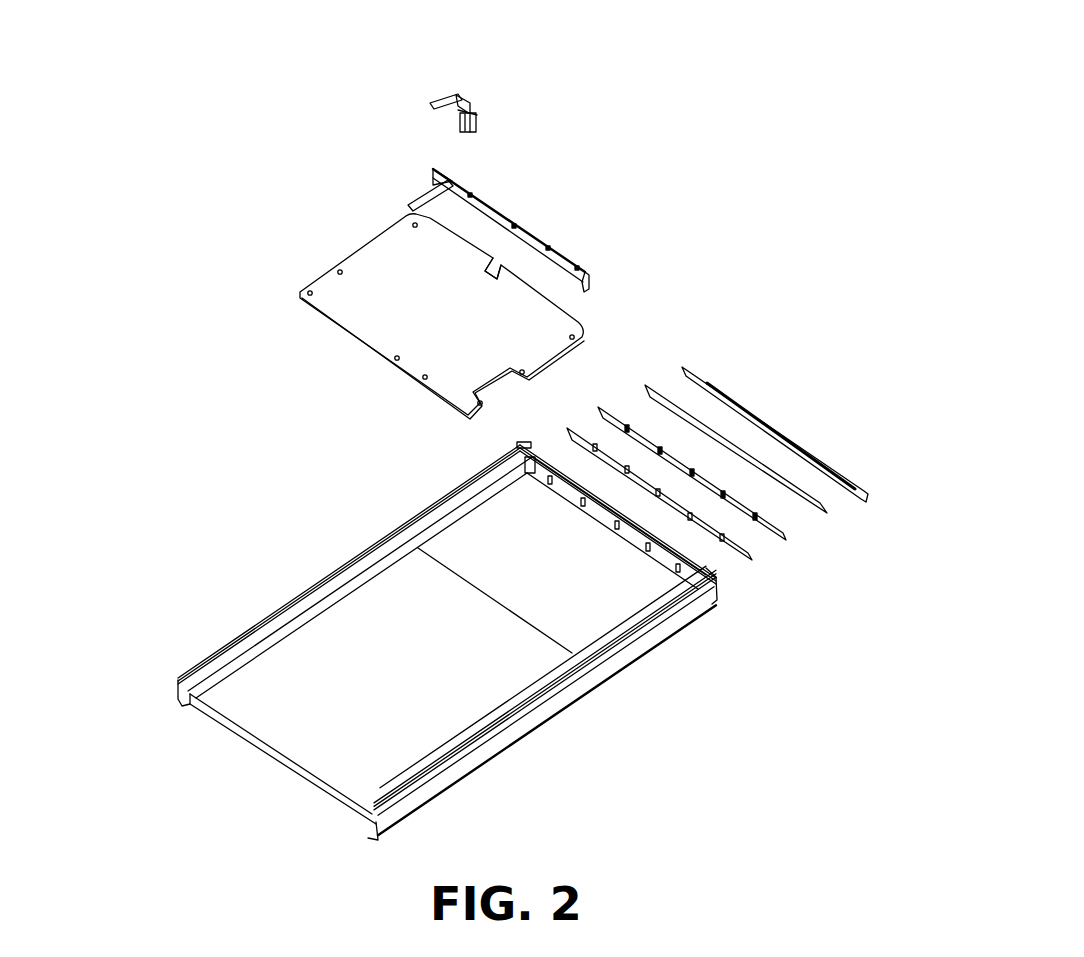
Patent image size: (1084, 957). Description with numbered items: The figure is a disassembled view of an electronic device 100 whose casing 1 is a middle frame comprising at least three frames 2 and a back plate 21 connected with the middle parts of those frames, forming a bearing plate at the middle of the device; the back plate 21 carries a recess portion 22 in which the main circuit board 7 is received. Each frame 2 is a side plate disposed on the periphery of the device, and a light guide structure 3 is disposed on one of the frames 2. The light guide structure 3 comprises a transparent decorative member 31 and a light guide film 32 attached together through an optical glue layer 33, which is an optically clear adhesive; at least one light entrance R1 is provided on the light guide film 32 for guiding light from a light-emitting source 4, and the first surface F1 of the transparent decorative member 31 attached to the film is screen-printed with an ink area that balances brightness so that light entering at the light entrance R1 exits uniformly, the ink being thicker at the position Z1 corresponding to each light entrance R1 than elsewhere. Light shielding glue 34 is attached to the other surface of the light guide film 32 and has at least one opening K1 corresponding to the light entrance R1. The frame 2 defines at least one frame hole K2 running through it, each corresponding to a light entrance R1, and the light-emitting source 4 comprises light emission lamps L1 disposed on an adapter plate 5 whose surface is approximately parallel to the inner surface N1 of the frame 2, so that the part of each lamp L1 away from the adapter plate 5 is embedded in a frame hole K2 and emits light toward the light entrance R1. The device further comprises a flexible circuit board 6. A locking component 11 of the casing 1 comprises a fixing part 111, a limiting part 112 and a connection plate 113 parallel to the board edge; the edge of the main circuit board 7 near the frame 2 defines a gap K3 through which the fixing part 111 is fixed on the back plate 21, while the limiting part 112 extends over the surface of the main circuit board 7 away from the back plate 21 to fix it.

The electronic device 100 is at (143, 328).
The casing 1 is at (466, 642).
The frame 2 is at (670, 550).
The back plate 21 is at (462, 716).
The recess portion 22 is at (567, 632).
The light guide structure 3 is at (756, 472).
The transparent decorative member 31 is at (814, 409).
The light guide film 32 is at (735, 446).
The optical glue layer 33 is at (828, 513).
The light shielding glue 34 is at (704, 529).
The light-emitting source 4 is at (601, 183).
The adapter plate 5 is at (553, 205).
The flexible circuit board 6 is at (423, 195).
The main circuit board 7 is at (434, 305).
The locking component 11 is at (481, 76).
The fixing part 111 is at (491, 104).
The limiting part 112 is at (443, 92).
The connection plate 113 is at (468, 103).
The opening K1 is at (723, 541).
The frame hole K2 is at (650, 551).
The gap K3 is at (498, 272).
The light emission lamp L1 is at (516, 225).
The inner surface N1 is at (550, 499).
The light entrance R1 is at (628, 426).
The position Z1 is at (712, 375).
The first surface F1 is at (768, 427).